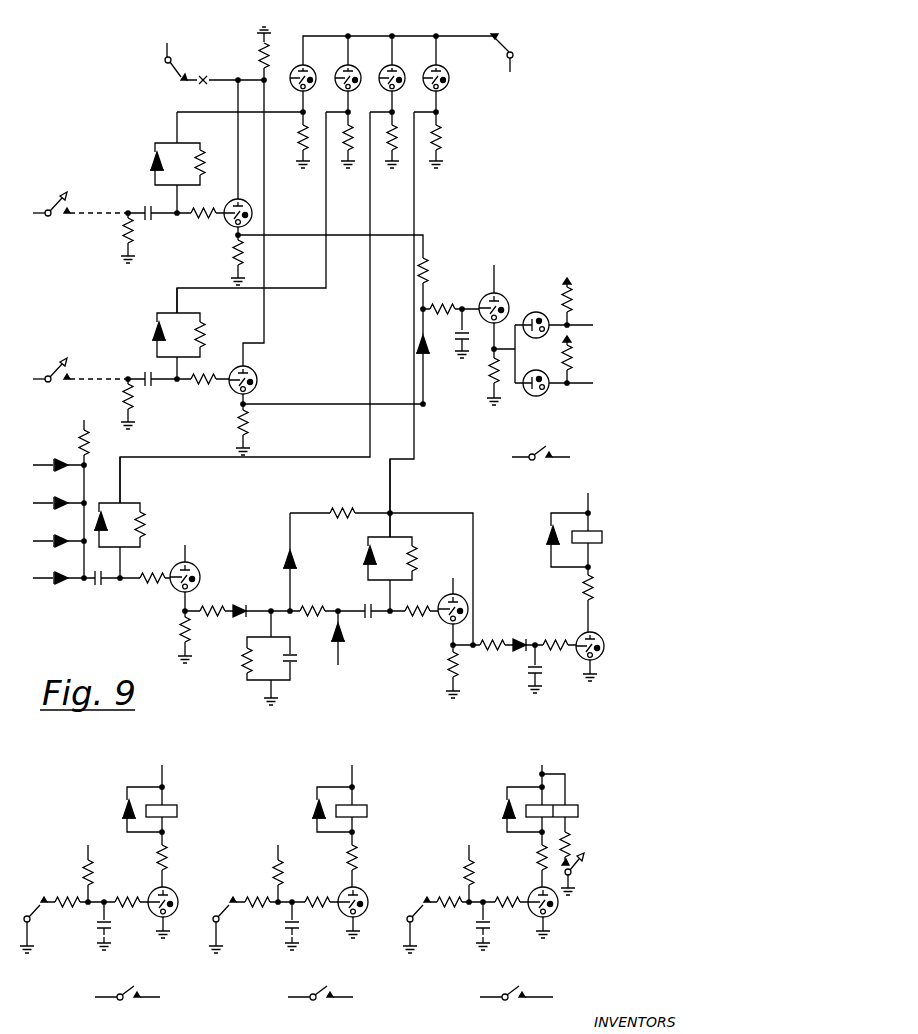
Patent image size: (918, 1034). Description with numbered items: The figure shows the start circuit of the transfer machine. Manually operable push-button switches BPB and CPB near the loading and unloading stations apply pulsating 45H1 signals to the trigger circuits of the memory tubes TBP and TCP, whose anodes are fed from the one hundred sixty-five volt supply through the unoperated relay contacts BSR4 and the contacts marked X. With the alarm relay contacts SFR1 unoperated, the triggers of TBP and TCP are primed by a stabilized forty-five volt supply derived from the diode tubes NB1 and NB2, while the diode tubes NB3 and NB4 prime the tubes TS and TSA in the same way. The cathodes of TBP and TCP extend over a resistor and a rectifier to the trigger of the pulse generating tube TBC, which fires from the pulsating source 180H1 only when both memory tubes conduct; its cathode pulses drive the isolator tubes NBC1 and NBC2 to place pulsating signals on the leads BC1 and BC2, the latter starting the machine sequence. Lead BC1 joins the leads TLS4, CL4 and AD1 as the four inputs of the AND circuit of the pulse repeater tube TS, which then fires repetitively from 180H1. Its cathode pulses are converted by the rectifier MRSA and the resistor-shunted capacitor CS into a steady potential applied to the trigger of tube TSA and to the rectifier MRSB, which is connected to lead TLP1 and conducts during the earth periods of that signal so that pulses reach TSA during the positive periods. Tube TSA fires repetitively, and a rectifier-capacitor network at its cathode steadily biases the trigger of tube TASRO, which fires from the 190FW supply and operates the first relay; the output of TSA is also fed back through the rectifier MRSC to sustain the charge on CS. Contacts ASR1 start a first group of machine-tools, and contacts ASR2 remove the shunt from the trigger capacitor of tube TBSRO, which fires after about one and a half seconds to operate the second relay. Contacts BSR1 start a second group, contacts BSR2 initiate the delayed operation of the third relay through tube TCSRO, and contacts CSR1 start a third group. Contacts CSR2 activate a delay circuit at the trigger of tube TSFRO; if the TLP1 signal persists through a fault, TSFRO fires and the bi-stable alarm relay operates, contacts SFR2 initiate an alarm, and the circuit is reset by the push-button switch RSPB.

The diode tube NB1 is at (310, 116).
The diode tube NB2 is at (355, 116).
The diode tube NB3 is at (399, 116).
The diode tube NB4 is at (443, 116).
The contacts of alarm relay SFR SFR1 is at (517, 53).
The contacts of relay BSR BSR4 is at (200, 65).
The pulsating 45 v. half-wave supply 45H1 is at (17, 296).
The push-button switch BPB is at (50, 204).
The push-button switch CPB is at (51, 370).
The memory tube TBP is at (226, 220).
The memory tube TCP is at (254, 379).
The pulse generating tube TBC is at (483, 294).
The pulsating 180 v. half-wave supply 180H1 is at (340, 415).
The isolator tube NBC2 is at (531, 317).
The isolator tube NBC1 is at (531, 375).
The lead BC2 is at (607, 325).
The lead BC1 is at (310, 424).
The lead TLS4 is at (42, 503).
The lead CL4 is at (42, 541).
The lead AD1 is at (42, 578).
The pulse repeater tube TS is at (195, 568).
The rectifier MRSA is at (241, 602).
The rectifier MRSB is at (357, 638).
The rectifier MRSC is at (309, 562).
The capacitor CS is at (277, 658).
The lead TLP1 is at (336, 677).
The tube TSA is at (442, 601).
The tube TASRO is at (571, 652).
The full-wave rectified supply lead 190FW is at (377, 623).
The contacts of relay ASR ASR1 is at (541, 461).
The tube TBSRO is at (144, 904).
The contacts of relay ASR ASR2 is at (28, 918).
The contacts of relay BSR BSR1 is at (127, 1001).
The tube TCSRO is at (334, 904).
The contacts of relay BSR BSR2 is at (218, 918).
The contacts of relay CSR CSR1 is at (320, 1001).
The push-button switch RSPB is at (586, 856).
The tube TSFRO is at (565, 912).
The contacts of relay CSR CSR2 is at (418, 918).
The contacts of relay SFR SFR2 is at (516, 1001).